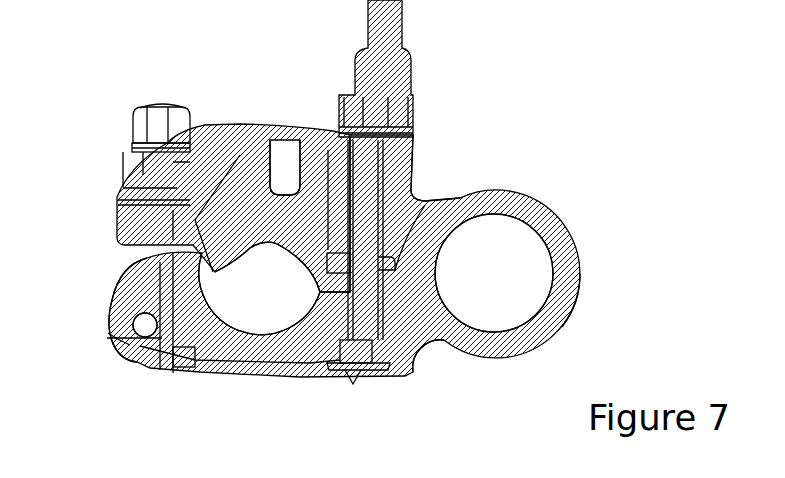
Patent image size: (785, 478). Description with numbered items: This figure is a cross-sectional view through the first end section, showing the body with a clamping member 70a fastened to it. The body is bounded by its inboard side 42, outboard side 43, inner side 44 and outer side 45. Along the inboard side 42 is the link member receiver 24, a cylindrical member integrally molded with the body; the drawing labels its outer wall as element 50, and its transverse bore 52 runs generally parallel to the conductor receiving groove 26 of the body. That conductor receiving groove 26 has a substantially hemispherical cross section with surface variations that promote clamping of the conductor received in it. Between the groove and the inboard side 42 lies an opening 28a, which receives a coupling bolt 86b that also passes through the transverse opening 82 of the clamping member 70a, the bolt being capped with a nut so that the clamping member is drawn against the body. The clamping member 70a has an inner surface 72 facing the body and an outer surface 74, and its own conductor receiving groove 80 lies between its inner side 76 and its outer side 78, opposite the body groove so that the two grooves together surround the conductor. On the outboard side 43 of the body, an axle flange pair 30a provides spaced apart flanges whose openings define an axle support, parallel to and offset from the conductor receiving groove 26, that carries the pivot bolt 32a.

The outer surface 74 is at (222, 118).
The conductor receiving groove 80 is at (254, 235).
The inner surface 72 is at (295, 236).
The transverse opening 82 is at (405, 144).
The inner side 76 is at (422, 164).
The opening 28a is at (386, 294).
The link member receiver 24 is at (578, 226).
The ring outer surface 50 is at (589, 290).
The transverse bore 52 is at (532, 310).
The inboard side 42 is at (424, 370).
The coupling bolt 86b is at (355, 395).
The conductor receiving groove 26 is at (268, 340).
The inner side 44 is at (230, 326).
The outer side 45 is at (192, 384).
The axle flange pair 30a is at (133, 367).
The outboard side 43 is at (96, 342).
The pivot bolt 32a is at (125, 303).
The clamping member 70a is at (98, 210).
The outer side 78 is at (106, 186).